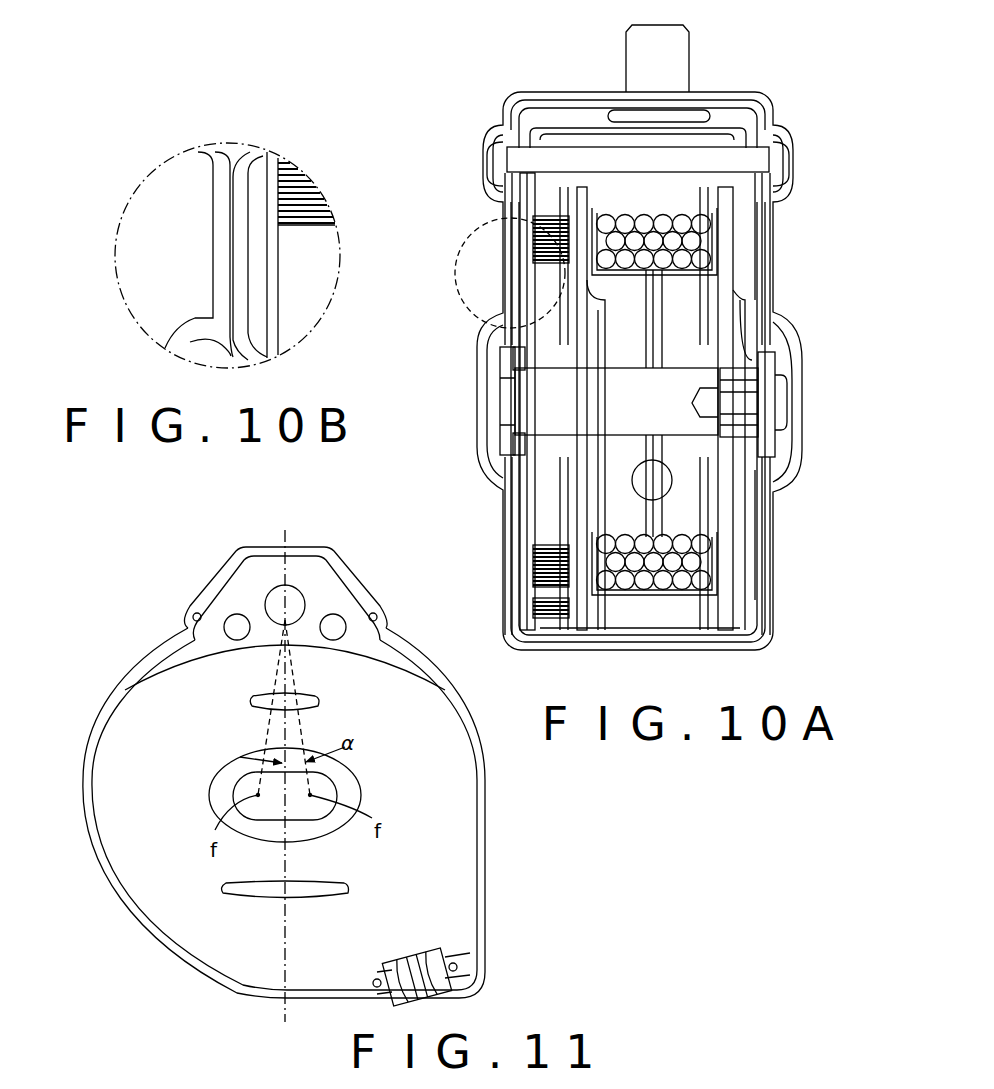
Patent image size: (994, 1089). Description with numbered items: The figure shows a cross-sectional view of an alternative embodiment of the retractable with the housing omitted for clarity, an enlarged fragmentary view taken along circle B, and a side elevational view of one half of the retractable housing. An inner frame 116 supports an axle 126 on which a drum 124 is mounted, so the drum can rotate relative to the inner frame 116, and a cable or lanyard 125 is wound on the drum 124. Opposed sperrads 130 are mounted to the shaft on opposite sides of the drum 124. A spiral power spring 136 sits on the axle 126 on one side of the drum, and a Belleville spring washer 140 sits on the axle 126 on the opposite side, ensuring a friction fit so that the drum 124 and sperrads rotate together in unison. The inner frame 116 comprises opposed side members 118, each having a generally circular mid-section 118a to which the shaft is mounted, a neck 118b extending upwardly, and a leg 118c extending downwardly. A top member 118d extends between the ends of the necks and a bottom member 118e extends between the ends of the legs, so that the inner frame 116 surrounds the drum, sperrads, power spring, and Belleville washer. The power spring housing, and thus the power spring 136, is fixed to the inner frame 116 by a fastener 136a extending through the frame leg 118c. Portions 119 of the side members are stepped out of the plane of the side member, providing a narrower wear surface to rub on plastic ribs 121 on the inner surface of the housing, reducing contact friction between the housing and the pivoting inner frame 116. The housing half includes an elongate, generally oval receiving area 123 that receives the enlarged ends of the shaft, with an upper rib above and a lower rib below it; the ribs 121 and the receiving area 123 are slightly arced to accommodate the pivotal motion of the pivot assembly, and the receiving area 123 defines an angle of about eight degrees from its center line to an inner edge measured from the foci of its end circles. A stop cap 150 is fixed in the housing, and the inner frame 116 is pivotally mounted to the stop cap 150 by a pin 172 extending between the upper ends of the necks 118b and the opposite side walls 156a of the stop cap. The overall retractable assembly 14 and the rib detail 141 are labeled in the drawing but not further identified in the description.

In FIG. 10A, the tool assembly 14 is at (786, 216).
In FIG. 10A, the inner frame 116 is at (768, 283).
In FIG. 10A, the side members 118 is at (506, 346).
In FIG. 10A, the mid-section 118a is at (758, 343).
In FIG. 10A, the neck 118b is at (773, 240).
In FIG. 10A, the leg 118c is at (762, 596).
In FIG. 10A, the top member 118d is at (718, 128).
In FIG. 10A, the bottom member 118e is at (716, 640).
In FIG. 10A, the stepped portions 119 is at (518, 258).
In FIG. 10B, the stepped portions 119 is at (237, 190).
In FIG. 10B, the ribs 121 is at (230, 247).
In FIG. 11, the ribs 121 is at (312, 700).
In FIG. 11, the receiving area 123 is at (358, 797).
In FIG. 10A, the drum 124 is at (683, 512).
In FIG. 10A, the cable or lanyard 125 is at (625, 225).
In FIG. 10A, the axle 126 is at (552, 438).
In FIG. 10A, the sperrads 130 is at (730, 287).
In FIG. 10A, the spiral power spring 136 is at (540, 558).
In FIG. 10A, the fastener 136a is at (548, 600).
In FIG. 10A, the Belleville spring washer 140 is at (733, 478).
In FIG. 10B, the rib 141 is at (213, 287).
In FIG. 10A, the stop cap 150 is at (774, 102).
In FIG. 10A, the side walls 156a is at (483, 182).
In FIG. 10A, the pin 172 is at (547, 147).
In FIG. 10A, the circle B is at (478, 212).